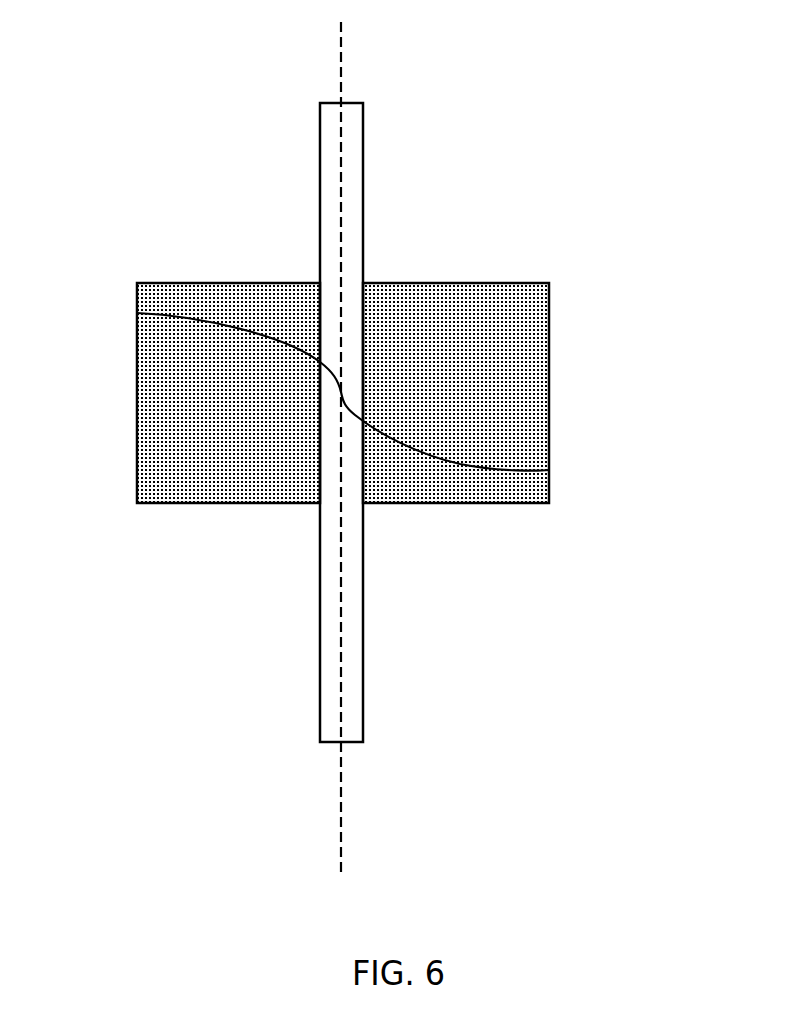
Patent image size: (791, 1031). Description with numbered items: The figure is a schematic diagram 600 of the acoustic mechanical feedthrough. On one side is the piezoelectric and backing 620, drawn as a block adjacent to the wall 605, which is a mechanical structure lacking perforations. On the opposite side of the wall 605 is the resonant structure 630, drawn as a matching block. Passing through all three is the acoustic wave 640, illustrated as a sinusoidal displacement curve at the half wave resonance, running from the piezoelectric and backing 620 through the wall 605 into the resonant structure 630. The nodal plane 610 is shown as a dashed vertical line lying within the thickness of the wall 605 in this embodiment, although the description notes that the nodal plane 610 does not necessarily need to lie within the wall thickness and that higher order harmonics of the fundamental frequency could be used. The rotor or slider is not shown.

The schematic diagram 600 is at (183, 186).
The wall 605 is at (374, 179).
The nodal plane 610 is at (360, 70).
The piezoelectric and backing 620 is at (203, 520).
The resonant structure 630 is at (433, 520).
The acoustic wave 640 is at (504, 480).